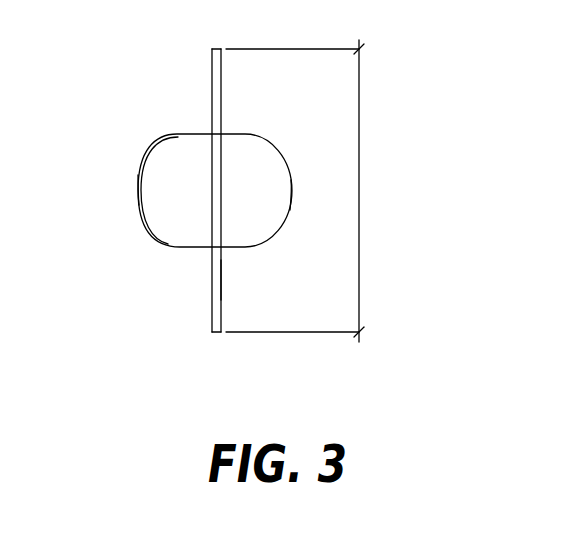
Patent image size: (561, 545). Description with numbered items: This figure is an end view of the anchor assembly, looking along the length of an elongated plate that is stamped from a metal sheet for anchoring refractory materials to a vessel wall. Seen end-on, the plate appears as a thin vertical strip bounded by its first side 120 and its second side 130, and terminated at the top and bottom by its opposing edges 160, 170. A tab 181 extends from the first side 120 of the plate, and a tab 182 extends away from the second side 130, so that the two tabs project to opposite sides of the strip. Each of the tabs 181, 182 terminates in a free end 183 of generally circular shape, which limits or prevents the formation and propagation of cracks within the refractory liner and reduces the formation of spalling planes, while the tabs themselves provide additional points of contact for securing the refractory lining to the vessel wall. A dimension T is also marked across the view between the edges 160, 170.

The first side 120 is at (212, 108).
The second side 130 is at (222, 275).
The edge 160 is at (217, 334).
The edge 170 is at (216, 48).
The tab 181 is at (182, 222).
The tab 182 is at (275, 170).
The free end 183 is at (138, 186).
The thickness dimension T is at (359, 190).